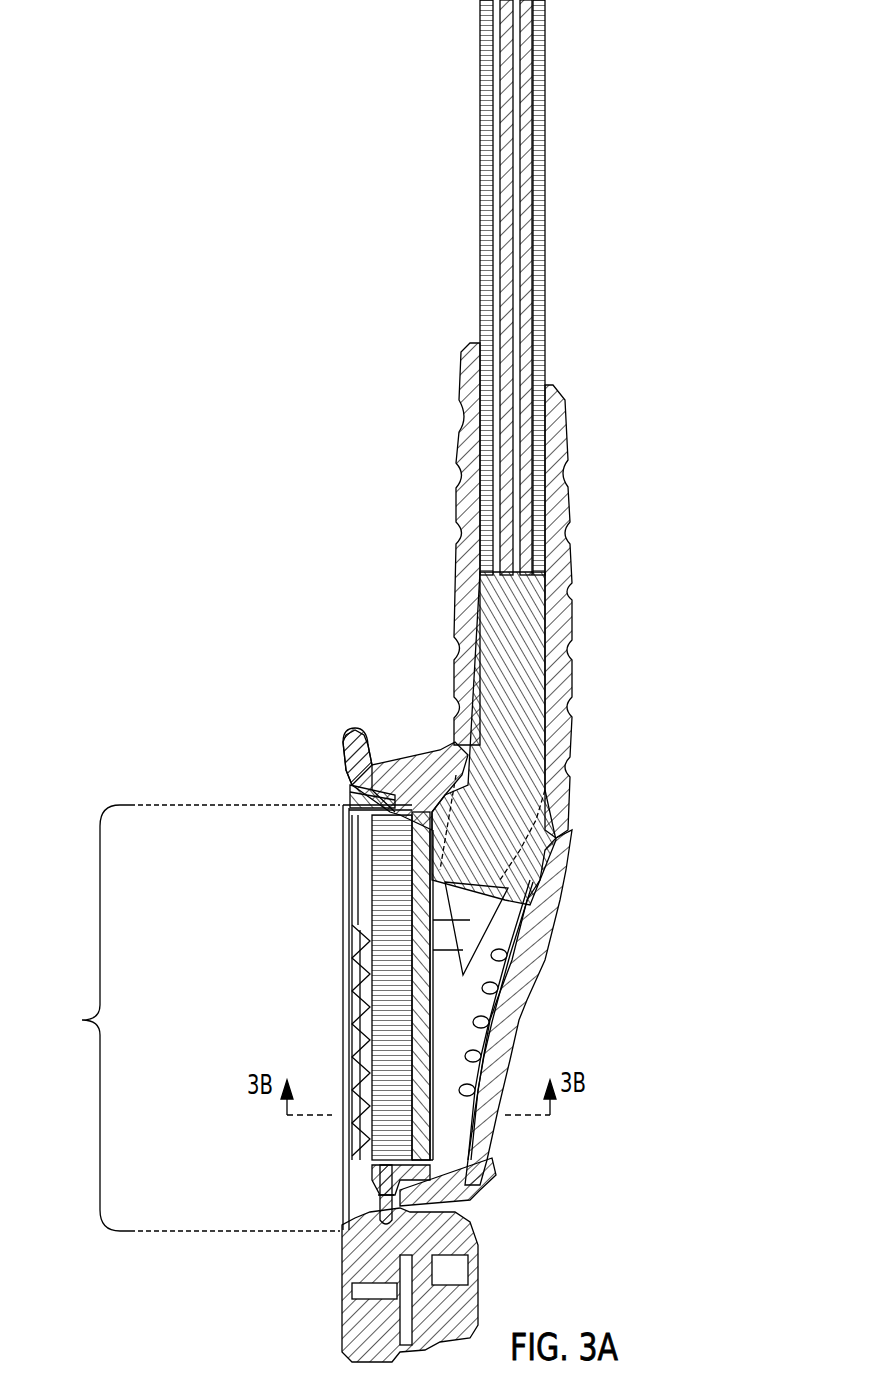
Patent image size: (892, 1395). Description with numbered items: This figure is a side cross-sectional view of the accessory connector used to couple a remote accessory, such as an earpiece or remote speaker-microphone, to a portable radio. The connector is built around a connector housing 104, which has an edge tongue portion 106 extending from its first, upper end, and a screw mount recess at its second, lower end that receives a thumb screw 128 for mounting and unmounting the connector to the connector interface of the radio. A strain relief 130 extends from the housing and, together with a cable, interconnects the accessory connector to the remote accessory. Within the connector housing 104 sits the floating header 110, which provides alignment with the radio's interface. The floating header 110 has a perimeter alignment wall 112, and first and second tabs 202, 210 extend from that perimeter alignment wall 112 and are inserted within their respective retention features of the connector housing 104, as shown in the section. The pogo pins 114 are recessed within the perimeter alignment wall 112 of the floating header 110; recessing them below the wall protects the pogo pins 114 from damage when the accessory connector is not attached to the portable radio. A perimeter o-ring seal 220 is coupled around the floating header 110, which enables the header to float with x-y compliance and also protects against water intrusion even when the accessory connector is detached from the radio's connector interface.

The connector housing 104 is at (520, 985).
The edge tongue portion 106 is at (352, 734).
The floating header 110 is at (271, 1018).
The perimeter alignment wall 112 is at (370, 878).
The pogo pins 114 is at (352, 1030).
The thumb screw 128 is at (478, 1230).
The strain relief 130 is at (571, 767).
The first tab 202 is at (378, 1205).
The second tab 210 is at (350, 797).
The perimeter o-ring seal 220 is at (404, 795).